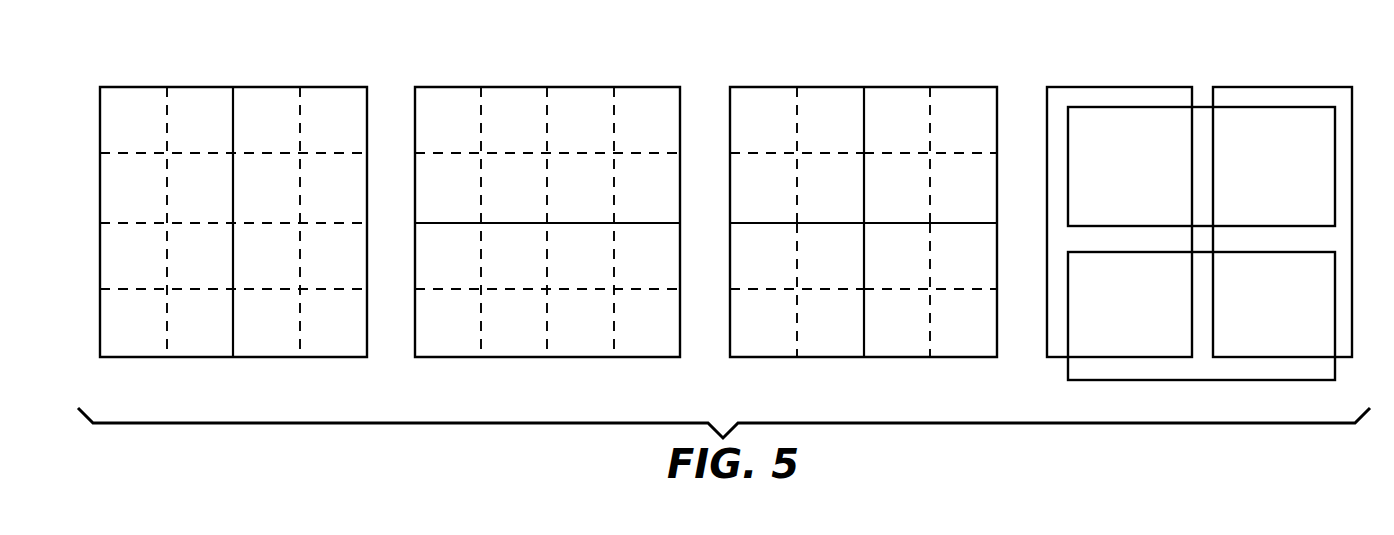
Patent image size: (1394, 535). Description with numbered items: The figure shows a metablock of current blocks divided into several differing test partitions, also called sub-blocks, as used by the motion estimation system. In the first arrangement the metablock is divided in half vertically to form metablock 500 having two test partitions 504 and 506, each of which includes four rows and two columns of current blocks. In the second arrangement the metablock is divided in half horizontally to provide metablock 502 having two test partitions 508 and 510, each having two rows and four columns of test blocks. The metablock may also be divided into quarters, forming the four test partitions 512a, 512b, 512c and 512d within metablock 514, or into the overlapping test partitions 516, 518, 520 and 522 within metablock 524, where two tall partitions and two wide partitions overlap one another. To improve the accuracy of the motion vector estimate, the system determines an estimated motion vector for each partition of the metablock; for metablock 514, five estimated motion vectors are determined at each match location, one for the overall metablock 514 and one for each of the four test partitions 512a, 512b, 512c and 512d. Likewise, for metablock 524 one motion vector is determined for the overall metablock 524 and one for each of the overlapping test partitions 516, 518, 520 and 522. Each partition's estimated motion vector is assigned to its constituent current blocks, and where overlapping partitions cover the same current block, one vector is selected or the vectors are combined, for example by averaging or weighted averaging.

The metablock 500 is at (248, 219).
The metablock 502 is at (564, 219).
The test partition 504 is at (210, 357).
The test partition 506 is at (322, 357).
The test partition 508 is at (512, 357).
The test partition 510 is at (450, 87).
The test partition 512a is at (730, 87).
The test partition 512b is at (886, 87).
The test partition 512c is at (787, 357).
The test partition 512d is at (948, 357).
The metablock 514 is at (875, 213).
The overlapping test partition 516 is at (1090, 87).
The overlapping test partition 518 is at (1223, 87).
The overlapping test partition 520 is at (1098, 225).
The overlapping test partition 522 is at (1105, 378).
The metablock 524 is at (1199, 203).